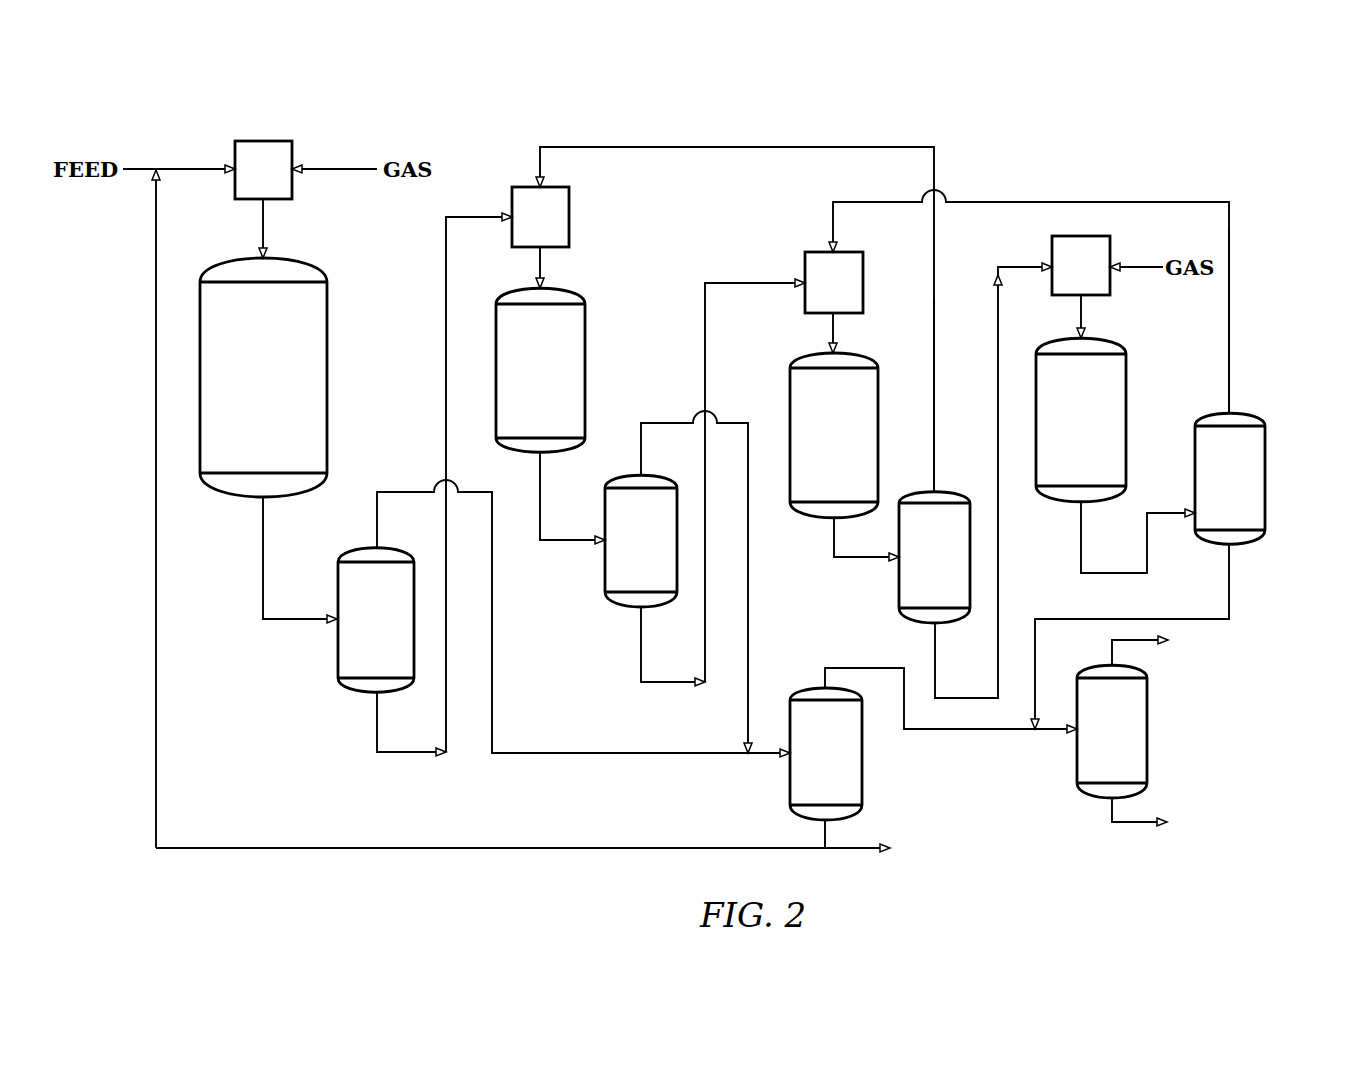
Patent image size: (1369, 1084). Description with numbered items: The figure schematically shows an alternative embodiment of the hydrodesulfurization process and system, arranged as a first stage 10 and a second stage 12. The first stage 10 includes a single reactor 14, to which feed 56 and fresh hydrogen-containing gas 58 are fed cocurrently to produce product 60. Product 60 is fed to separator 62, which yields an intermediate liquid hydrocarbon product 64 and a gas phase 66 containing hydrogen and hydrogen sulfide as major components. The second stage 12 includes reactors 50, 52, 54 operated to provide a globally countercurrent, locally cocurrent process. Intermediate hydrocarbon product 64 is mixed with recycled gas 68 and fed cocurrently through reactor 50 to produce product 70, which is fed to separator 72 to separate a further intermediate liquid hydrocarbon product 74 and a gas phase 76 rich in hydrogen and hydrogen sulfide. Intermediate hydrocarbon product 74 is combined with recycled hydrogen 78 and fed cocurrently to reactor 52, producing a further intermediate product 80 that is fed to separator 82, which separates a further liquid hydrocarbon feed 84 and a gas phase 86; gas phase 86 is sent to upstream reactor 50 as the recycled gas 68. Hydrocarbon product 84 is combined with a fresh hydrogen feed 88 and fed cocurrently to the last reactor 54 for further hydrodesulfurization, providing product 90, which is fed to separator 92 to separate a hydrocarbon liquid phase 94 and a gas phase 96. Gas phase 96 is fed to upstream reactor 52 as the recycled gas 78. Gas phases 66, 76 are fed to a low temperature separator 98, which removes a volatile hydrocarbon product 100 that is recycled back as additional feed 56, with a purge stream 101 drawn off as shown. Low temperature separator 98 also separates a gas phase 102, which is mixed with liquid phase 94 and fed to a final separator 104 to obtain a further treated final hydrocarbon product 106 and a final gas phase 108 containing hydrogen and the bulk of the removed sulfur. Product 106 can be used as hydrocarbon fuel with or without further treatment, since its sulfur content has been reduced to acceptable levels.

The first stage 10 is at (140, 417).
The second stage 12 is at (1300, 192).
The reactor 14 is at (335, 358).
The reactor 50 is at (578, 345).
The reactor 52 is at (881, 383).
The last reactor 54 is at (1113, 410).
The feed 56 is at (203, 168).
The fresh hydrogen-containing gas 58 is at (343, 168).
The product 60 is at (263, 563).
The separator 62 is at (334, 648).
The intermediate liquid hydrocarbon product 64 is at (408, 755).
The gas phase 66 is at (410, 490).
The recycled gas 68 is at (598, 149).
The product 70 is at (545, 490).
The separator 72 is at (613, 567).
The intermediate liquid hydrocarbon product 74 is at (665, 683).
The gas phase 76 is at (660, 422).
The recycled hydrogen 78 is at (860, 201).
The intermediate product 80 is at (848, 558).
The separator 82 is at (957, 510).
The liquid hydrocarbon feed 84 is at (958, 697).
The gas phase 86 is at (935, 283).
The fresh hydrogen feed 88 is at (1145, 268).
The product 90 is at (1078, 553).
The separator 92 is at (1258, 485).
The hydrocarbon liquid phase 94 is at (1232, 588).
The gas phase 96 is at (1230, 317).
The low temperature separator 98 is at (866, 775).
The volatile hydrocarbon product 100 is at (740, 848).
The purge stream 101 is at (856, 850).
The gas phase 102 is at (862, 666).
The final separator 104 is at (1150, 748).
The final hydrocarbon product 106 is at (1135, 824).
The final gas phase 108 is at (1145, 642).